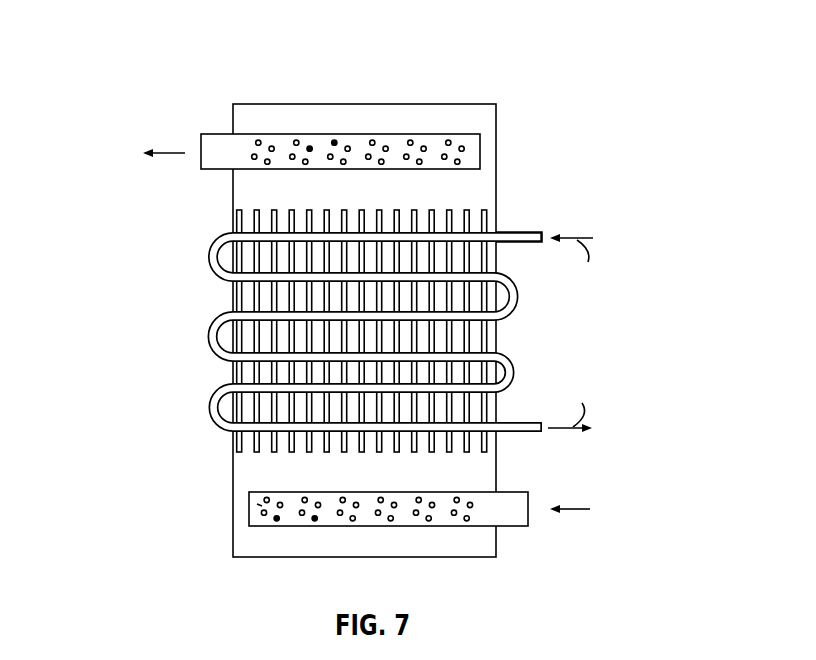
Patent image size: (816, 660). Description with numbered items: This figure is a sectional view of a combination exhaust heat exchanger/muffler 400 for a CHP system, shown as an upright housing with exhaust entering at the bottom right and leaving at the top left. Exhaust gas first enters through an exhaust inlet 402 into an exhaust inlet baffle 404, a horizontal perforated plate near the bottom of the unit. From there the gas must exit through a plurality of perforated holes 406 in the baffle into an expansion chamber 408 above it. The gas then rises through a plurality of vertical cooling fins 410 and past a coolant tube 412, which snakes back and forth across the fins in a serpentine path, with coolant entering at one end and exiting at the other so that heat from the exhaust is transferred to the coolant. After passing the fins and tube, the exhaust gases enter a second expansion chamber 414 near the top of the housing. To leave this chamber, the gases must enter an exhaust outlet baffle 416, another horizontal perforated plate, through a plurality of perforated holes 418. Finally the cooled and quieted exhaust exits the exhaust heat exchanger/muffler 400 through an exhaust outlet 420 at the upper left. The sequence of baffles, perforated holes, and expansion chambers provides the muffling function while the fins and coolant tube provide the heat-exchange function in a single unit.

The combination exhaust heat exchanger/muffler 400 is at (156, 62).
The exhaust inlet 402 is at (578, 505).
The exhaust inlet baffle 404 is at (350, 528).
The perforated holes 406 is at (315, 521).
The expansion chamber 408 is at (314, 492).
The cooling fins 410 is at (468, 228).
The coolant tube 412 is at (208, 330).
The second expansion chamber 414 is at (253, 183).
The exhaust outlet baffle 416 is at (379, 116).
The perforated holes 418 is at (334, 140).
The exhaust outlet 420 is at (168, 151).